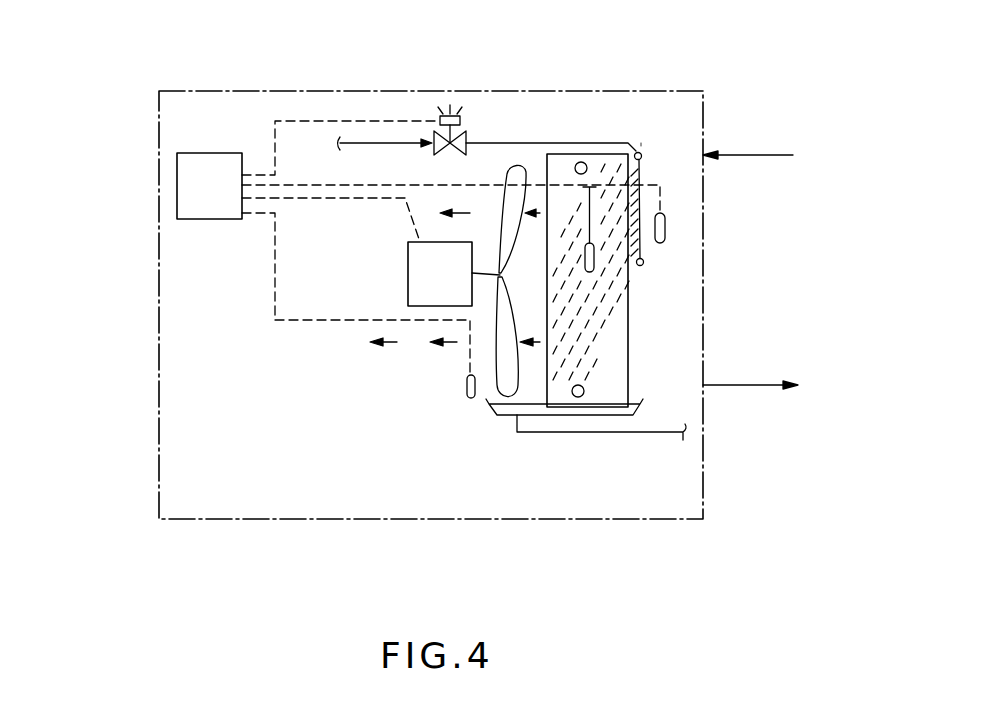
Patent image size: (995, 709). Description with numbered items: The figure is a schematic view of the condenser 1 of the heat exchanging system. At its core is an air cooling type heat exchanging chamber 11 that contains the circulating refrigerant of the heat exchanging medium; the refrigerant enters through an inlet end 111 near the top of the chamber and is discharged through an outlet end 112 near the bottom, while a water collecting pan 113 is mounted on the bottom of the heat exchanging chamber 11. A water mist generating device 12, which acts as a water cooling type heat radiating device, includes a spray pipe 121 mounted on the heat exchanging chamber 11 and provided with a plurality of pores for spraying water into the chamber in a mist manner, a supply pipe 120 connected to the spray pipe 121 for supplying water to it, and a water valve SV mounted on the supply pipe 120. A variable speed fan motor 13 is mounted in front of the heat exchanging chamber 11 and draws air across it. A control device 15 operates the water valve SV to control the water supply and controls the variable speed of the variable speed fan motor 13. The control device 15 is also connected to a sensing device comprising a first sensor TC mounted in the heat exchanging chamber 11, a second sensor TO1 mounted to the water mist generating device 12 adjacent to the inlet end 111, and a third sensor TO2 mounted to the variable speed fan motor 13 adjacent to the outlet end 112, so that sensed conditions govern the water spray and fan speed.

The condenser 1 is at (137, 268).
The heat exchanging chamber 11 is at (628, 357).
The inlet end 111 is at (587, 165).
The outlet end 112 is at (585, 391).
The water collecting pan 113 is at (507, 414).
The water mist generating device 12 is at (641, 143).
The supply pipe 120 is at (535, 142).
The spray pipe 121 is at (644, 172).
The variable speed fan motor 13 is at (408, 283).
The control device 15 is at (200, 198).
The water valve SV is at (461, 121).
The first sensor TC is at (594, 262).
The second sensor TO1 is at (665, 228).
The third sensor TO2 is at (466, 396).